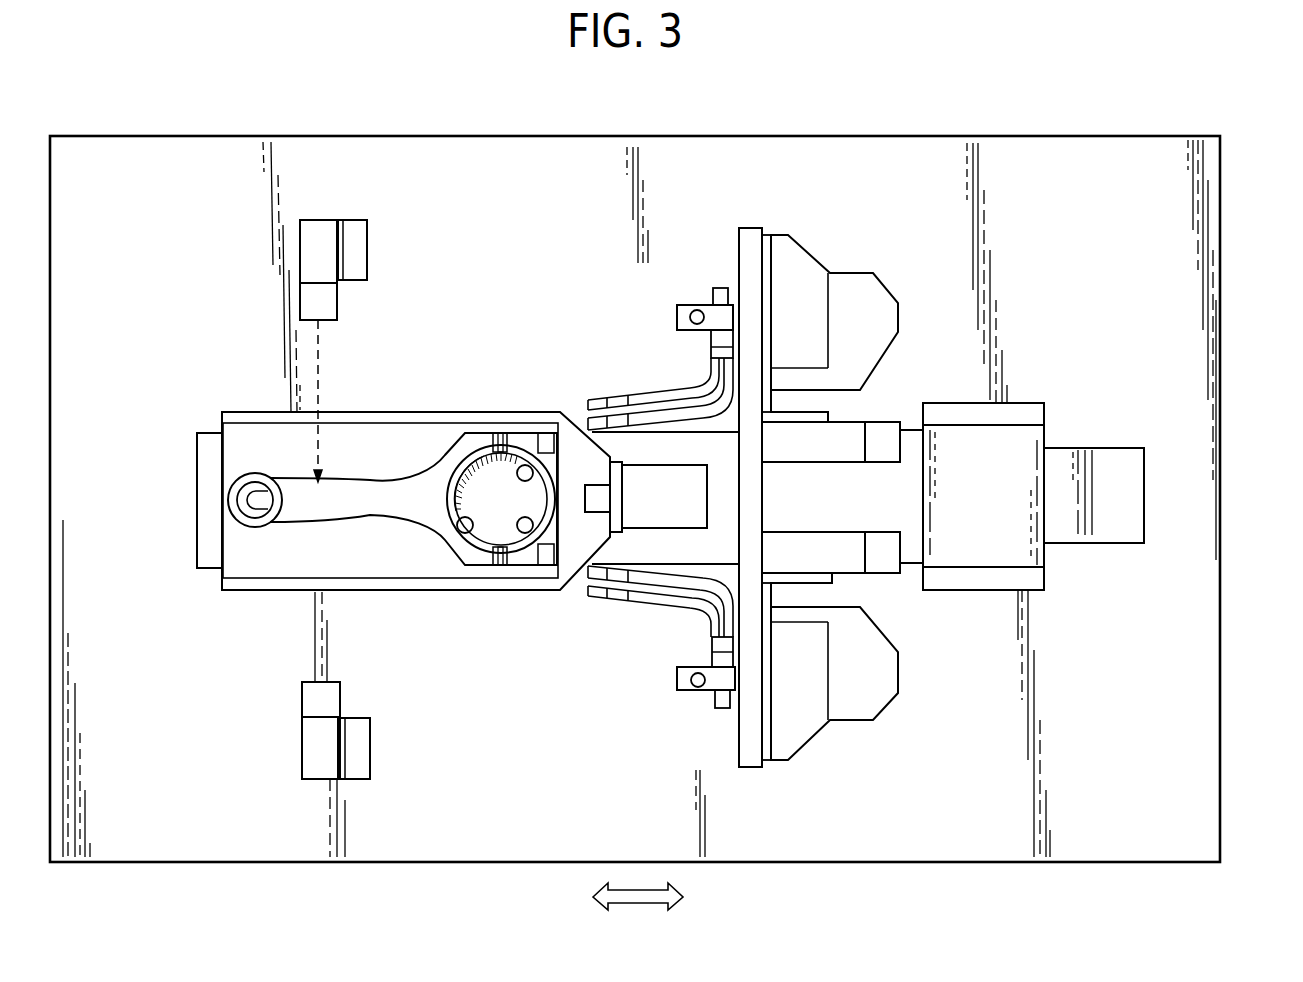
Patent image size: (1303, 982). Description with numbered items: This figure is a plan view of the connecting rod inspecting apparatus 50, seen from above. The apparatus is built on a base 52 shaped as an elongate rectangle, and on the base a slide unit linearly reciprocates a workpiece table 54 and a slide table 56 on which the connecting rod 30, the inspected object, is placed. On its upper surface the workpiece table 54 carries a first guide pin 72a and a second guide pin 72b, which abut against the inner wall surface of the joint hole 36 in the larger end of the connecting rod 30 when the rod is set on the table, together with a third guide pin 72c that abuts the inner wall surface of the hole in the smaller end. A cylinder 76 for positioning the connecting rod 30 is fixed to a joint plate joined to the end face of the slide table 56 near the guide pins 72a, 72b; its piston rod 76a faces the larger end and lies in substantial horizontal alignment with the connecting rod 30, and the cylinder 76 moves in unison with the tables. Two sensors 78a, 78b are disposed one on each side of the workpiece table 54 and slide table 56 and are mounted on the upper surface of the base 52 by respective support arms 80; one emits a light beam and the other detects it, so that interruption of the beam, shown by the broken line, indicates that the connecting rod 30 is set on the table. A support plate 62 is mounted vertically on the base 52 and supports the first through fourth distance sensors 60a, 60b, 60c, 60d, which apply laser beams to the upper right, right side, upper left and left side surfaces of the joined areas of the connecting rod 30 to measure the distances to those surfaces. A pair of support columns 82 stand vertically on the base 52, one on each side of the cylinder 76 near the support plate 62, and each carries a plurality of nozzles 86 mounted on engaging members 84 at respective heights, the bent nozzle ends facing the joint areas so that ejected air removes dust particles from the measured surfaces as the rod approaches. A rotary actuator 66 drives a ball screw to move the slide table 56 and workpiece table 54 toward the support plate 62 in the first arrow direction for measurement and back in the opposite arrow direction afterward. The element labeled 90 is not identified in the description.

The connecting rod 30 is at (349, 500).
The joint hole 36 is at (461, 500).
The connecting rod inspecting apparatus 50 is at (1040, 78).
The base 52 is at (1211, 546).
The workpiece table 54 is at (228, 451).
The slide table 56 is at (228, 582).
The first distance sensor 60a is at (850, 432).
The second distance sensor 60b is at (858, 288).
The third distance sensor 60c is at (843, 540).
The fourth distance sensor 60d is at (877, 682).
The support plate 62 is at (750, 236).
The rotary actuator 66 is at (1095, 463).
The first guide pin 72a is at (523, 465).
The second guide pin 72b is at (535, 540).
The third guide pin 72c is at (252, 501).
The cylinder 76 is at (646, 495).
The piston rod 76a is at (598, 502).
The sensor 78a is at (300, 301).
The sensor 78b is at (302, 698).
The support arm 80 is at (358, 258).
The support column 82 is at (696, 311).
The engaging member 84 is at (677, 308).
The nozzle 86 is at (650, 403).
The support plate 90 is at (800, 412).